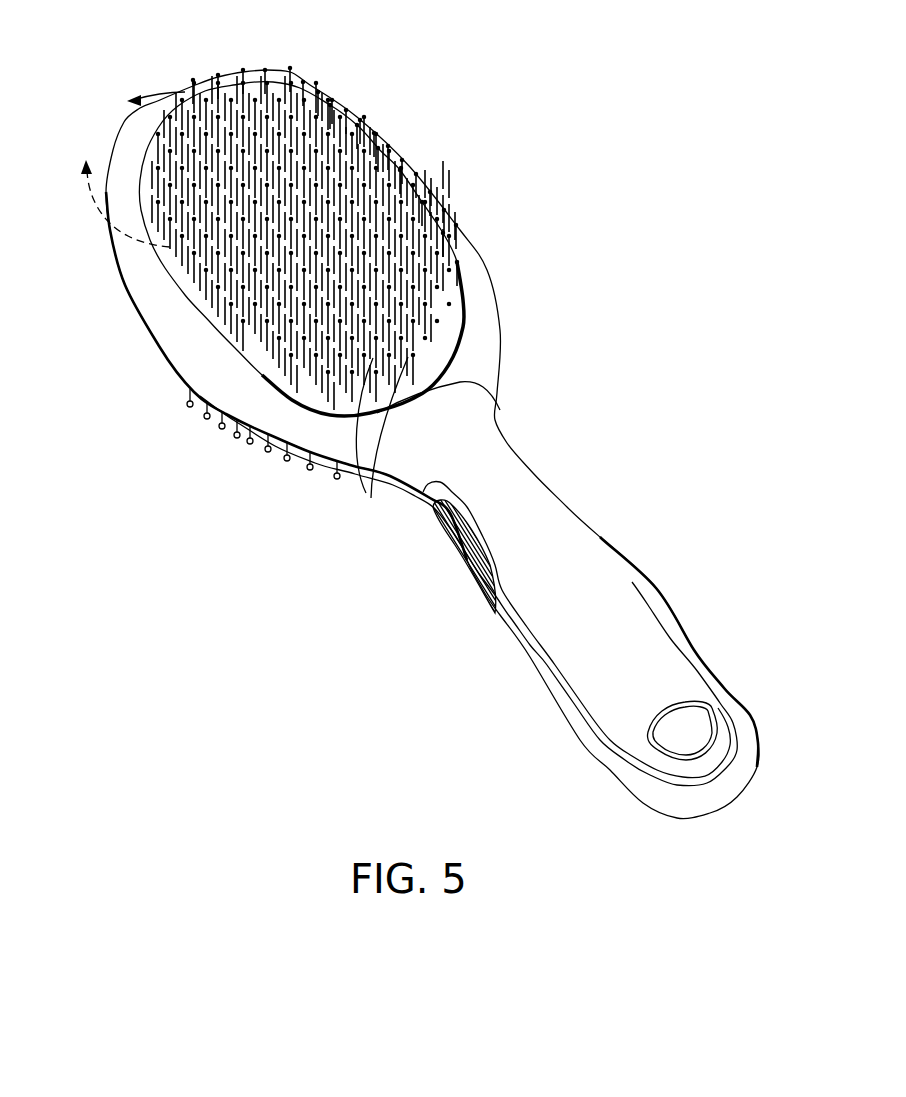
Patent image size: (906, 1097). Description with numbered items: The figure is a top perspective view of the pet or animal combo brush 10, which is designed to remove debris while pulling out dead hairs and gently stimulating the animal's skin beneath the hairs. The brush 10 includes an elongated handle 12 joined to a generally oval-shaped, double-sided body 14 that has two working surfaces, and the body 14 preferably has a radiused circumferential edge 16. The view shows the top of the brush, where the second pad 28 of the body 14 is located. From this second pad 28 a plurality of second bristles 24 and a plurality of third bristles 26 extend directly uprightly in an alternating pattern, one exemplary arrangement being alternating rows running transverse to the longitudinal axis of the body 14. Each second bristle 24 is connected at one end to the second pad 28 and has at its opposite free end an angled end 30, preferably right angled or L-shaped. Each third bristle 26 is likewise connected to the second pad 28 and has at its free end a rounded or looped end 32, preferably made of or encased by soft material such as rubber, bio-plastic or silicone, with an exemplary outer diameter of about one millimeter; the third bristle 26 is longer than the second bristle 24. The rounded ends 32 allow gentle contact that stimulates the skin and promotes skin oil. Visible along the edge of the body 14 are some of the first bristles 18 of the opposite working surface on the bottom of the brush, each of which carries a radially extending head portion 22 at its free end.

The combo brush 10 is at (608, 180).
The elongated handle 12 is at (636, 612).
The body 14 is at (153, 273).
The radiused circumferential edge 16 is at (154, 311).
The first bristles 18 is at (250, 440).
The head portion 22 is at (310, 478).
The second bristles 24 is at (218, 318).
The third bristles 26 is at (351, 116).
The second pad 28 is at (447, 341).
The angled end 30 is at (381, 440).
The rounded end 32 is at (292, 69).